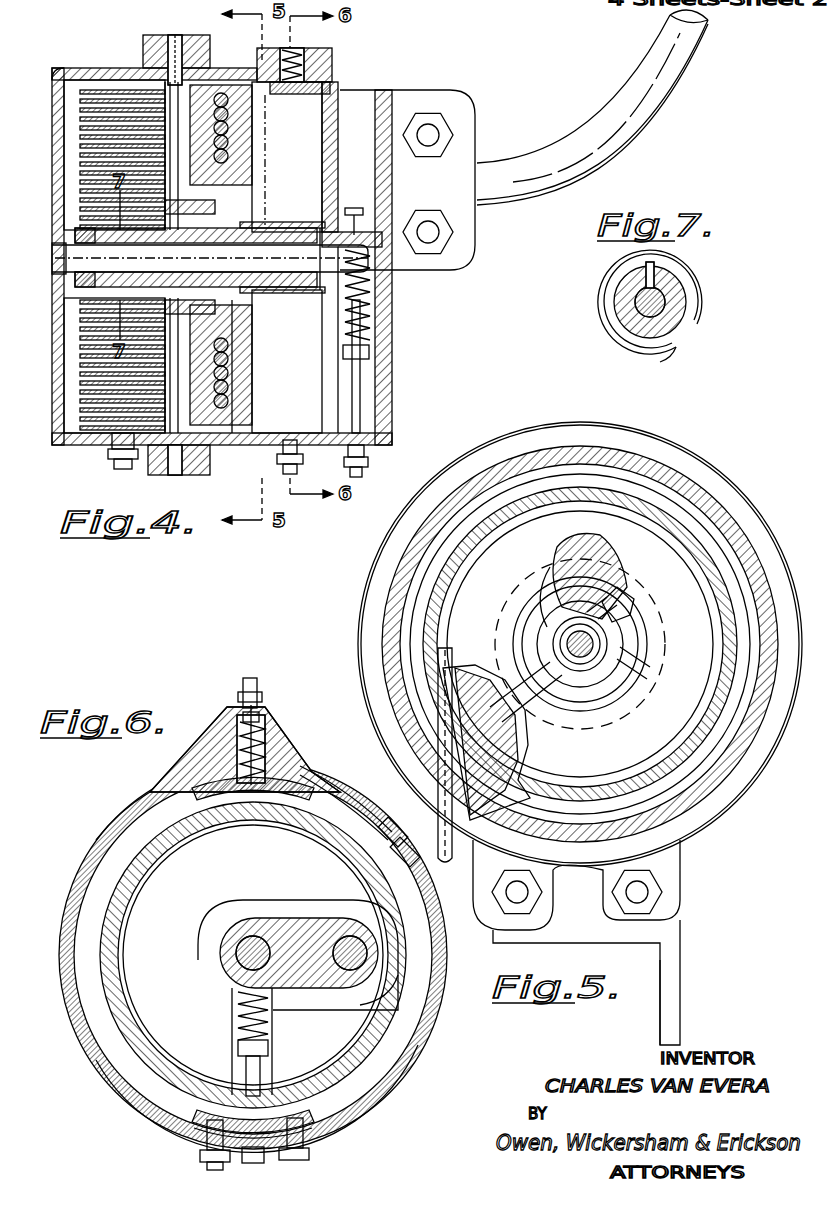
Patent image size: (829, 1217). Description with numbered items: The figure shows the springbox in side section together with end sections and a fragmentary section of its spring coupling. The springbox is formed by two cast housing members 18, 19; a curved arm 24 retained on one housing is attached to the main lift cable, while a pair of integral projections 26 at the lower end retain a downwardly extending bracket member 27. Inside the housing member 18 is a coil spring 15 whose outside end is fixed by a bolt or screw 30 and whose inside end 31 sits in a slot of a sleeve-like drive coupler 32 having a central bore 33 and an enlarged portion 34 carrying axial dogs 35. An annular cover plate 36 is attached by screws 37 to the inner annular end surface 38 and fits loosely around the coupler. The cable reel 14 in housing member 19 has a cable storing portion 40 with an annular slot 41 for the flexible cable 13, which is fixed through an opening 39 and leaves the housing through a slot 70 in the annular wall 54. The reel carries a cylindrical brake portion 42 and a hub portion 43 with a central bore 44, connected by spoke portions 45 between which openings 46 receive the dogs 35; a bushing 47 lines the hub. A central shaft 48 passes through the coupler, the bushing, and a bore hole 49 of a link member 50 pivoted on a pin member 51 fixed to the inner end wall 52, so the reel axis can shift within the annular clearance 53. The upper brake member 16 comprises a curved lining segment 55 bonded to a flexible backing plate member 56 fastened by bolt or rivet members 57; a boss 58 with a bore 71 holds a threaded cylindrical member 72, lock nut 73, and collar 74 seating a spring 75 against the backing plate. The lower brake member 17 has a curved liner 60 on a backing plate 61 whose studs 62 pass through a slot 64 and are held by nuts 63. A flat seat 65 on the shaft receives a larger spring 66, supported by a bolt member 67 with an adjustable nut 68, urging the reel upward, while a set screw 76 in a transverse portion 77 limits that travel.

In FIG. 4, the flexible cable 13 is at (236, 425).
In FIG. 5, the flexible cable 13 is at (436, 766).
In FIG. 4, the cable reel 14 is at (260, 155).
In FIG. 4, the coil spring 15 is at (78, 440).
In FIG. 7, the coil spring 15 is at (612, 275).
In FIG. 4, the upper brake member 16 is at (325, 82).
In FIG. 6, the upper brake member 16 is at (272, 802).
In FIG. 4, the lower brake member 17 is at (300, 455).
In FIG. 6, the lower brake member 17 is at (205, 1112).
In FIG. 4, the housing member 18 is at (108, 455).
In FIG. 4, the housing member 19 is at (392, 392).
In FIG. 4, the curved arm 24 is at (680, 95).
In FIG. 5, the integral projections 26 is at (682, 875).
In FIG. 5, the bracket member 27 is at (684, 982).
In FIG. 4, the bolt or screw 30 is at (122, 455).
In FIG. 4, the inside end of coil spring 31 is at (82, 232).
In FIG. 7, the inside end of coil spring 31 is at (655, 270).
In FIG. 4, the drive coupler 32 is at (80, 282).
In FIG. 7, the drive coupler 32 is at (622, 325).
In FIG. 4, the central bore 33 is at (58, 260).
In FIG. 4, the enlarged portion 34 is at (200, 302).
In FIG. 4, the projections or dogs 35 is at (216, 207).
In FIG. 5, the projections or dogs 35 is at (530, 634).
In FIG. 4, the annular cover plate 36 is at (168, 110).
In FIG. 4, the screws 37 is at (165, 36).
In FIG. 4, the inner annular end surface 38 is at (183, 55).
In FIG. 5, the opening 39 is at (634, 592).
In FIG. 4, the cable storing portion 40 is at (232, 128).
In FIG. 4, the annular slot 41 is at (255, 375).
In FIG. 4, the cylindrical brake portion 42 is at (340, 95).
In FIG. 5, the cylindrical brake portion 42 is at (568, 782).
In FIG. 6, the cylindrical brake portion 42 is at (108, 1006).
In FIG. 4, the hub portion 43 is at (250, 228).
In FIG. 5, the hub portion 43 is at (607, 647).
In FIG. 4, the central bore 44 is at (245, 240).
In FIG. 5, the central bore 44 is at (612, 650).
In FIG. 5, the spoke portions 45 is at (515, 655).
In FIG. 5, the openings 46 is at (542, 578).
In FIG. 4, the bearing or bushing 47 is at (262, 224).
In FIG. 4, the central shaft 48 is at (180, 269).
In FIG. 7, the central shaft 48 is at (665, 300).
In FIG. 5, the central shaft 48 is at (574, 638).
In FIG. 6, the central shaft 48 is at (240, 945).
In FIG. 4, the bore hole 49 is at (320, 280).
In FIG. 6, the bore hole 49 is at (270, 930).
In FIG. 4, the link member 50 is at (328, 200).
In FIG. 6, the link member 50 is at (296, 990).
In FIG. 6, the pin member 51 is at (350, 972).
In FIG. 6, the inner end wall 52 is at (318, 918).
In FIG. 6, the annular clearance 53 is at (118, 848).
In FIG. 6, the annular wall 54 is at (68, 893).
In FIG. 6, the curved segment 55 is at (180, 795).
In FIG. 6, the backing plate member 56 is at (352, 808).
In FIG. 6, the bolt or rivet members 57 is at (416, 852).
In FIG. 4, the boss 58 is at (322, 55).
In FIG. 6, the boss 58 is at (285, 728).
In FIG. 6, the curved liner 60 is at (305, 1112).
In FIG. 6, the backing plate 61 is at (305, 1135).
In FIG. 6, the studs 62 is at (200, 1142).
In FIG. 6, the nuts 63 is at (218, 1160).
In FIG. 6, the slot 64 is at (412, 1068).
In FIG. 4, the flat horizontal seat 65 is at (362, 258).
In FIG. 4, the spring 66 is at (370, 325).
In FIG. 6, the spring 66 is at (237, 1018).
In FIG. 4, the bolt member 67 is at (362, 405).
In FIG. 6, the bolt member 67 is at (262, 1076).
In FIG. 4, the adjustable nut 68 is at (370, 352).
In FIG. 6, the adjustable nut 68 is at (238, 1049).
In FIG. 5, the slot 70 is at (398, 682).
In FIG. 6, the bore 71 is at (236, 748).
In FIG. 6, the cylindrical member 72 is at (268, 752).
In FIG. 6, the lock nut 73 is at (262, 695).
In FIG. 6, the collar 74 is at (240, 718).
In FIG. 4, the spring 75 is at (300, 50).
In FIG. 6, the spring 75 is at (240, 782).
In FIG. 4, the set screw 76 is at (355, 208).
In FIG. 4, the transverse portion 77 is at (372, 220).